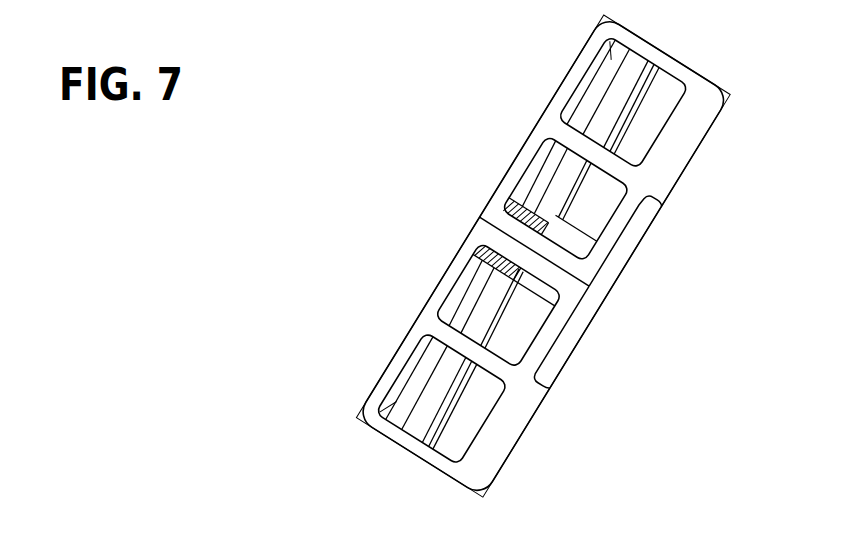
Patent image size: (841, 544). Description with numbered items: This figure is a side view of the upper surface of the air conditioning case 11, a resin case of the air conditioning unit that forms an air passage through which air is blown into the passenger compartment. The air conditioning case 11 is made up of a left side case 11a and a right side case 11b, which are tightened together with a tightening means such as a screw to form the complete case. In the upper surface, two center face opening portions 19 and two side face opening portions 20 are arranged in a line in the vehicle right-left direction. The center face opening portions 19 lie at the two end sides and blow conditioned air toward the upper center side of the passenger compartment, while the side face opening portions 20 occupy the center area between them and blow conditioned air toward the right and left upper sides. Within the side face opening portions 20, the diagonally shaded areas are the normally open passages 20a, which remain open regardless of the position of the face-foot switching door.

The air conditioning case 11 is at (724, 273).
The left side case 11a is at (550, 333).
The right side case 11b is at (617, 229).
The center face opening portion 19 is at (614, 96).
The side face opening portion 20 is at (560, 183).
The normally open passage 20a is at (505, 207).